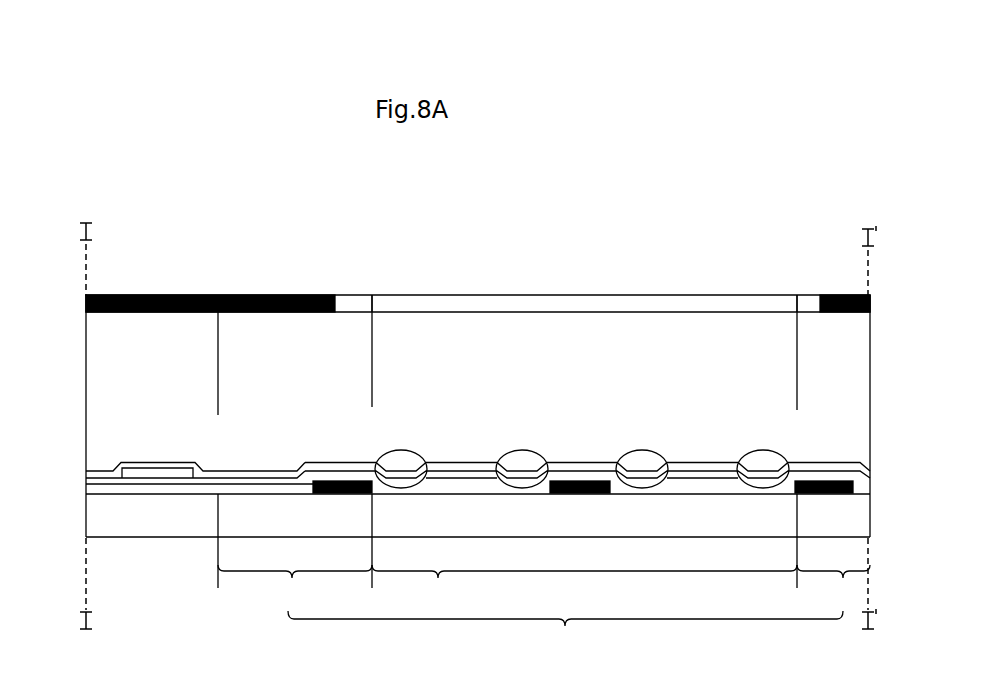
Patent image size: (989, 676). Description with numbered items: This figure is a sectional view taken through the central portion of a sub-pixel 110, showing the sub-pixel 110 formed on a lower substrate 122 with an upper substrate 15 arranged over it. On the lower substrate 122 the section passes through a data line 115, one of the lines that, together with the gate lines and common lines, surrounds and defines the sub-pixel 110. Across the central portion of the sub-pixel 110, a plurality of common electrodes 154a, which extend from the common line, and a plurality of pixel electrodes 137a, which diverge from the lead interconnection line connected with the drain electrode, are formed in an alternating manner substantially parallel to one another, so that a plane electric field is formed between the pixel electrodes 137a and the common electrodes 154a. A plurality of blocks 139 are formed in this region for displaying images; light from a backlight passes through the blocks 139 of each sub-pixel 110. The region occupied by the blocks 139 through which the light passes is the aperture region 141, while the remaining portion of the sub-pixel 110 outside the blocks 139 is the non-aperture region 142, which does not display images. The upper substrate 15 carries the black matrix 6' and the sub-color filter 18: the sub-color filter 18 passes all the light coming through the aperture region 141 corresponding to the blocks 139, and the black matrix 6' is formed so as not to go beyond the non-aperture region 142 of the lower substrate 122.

The upper substrate 15 is at (660, 279).
The sub-color filter 18 is at (552, 300).
The black matrix 6' is at (478, 263).
The lower substrate 122 is at (93, 488).
The data line 115 is at (155, 478).
The block 139 is at (406, 450).
The common electrode 154a is at (330, 481).
The pixel electrode 137a is at (465, 478).
The non-aperture region 142 is at (544, 585).
The aperture region 141 is at (584, 585).
The sub-pixel 110 is at (565, 632).